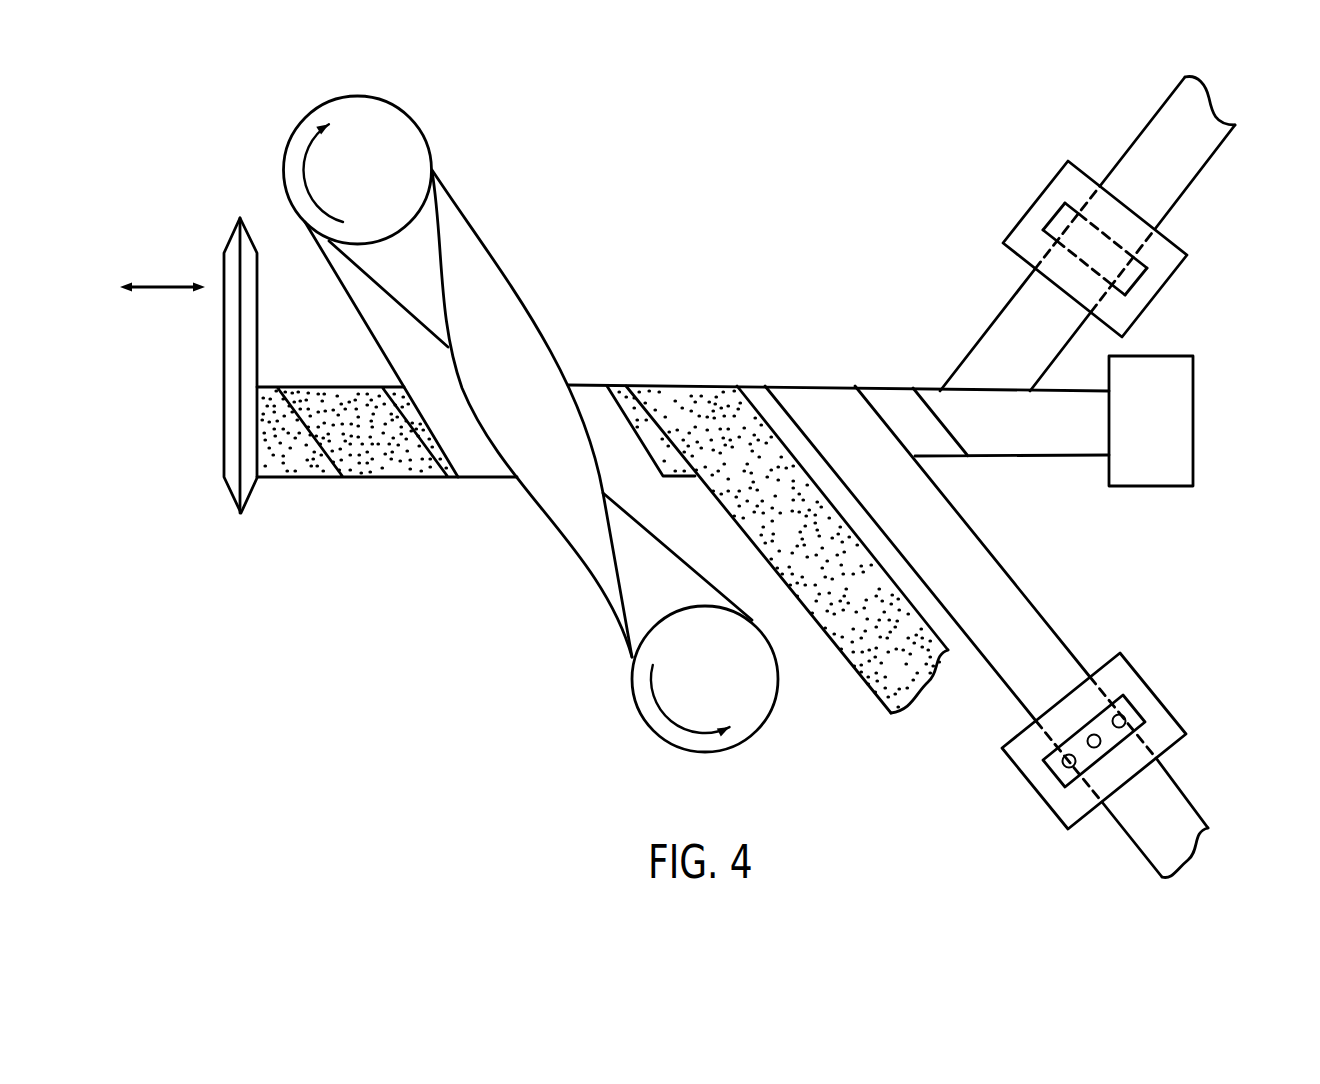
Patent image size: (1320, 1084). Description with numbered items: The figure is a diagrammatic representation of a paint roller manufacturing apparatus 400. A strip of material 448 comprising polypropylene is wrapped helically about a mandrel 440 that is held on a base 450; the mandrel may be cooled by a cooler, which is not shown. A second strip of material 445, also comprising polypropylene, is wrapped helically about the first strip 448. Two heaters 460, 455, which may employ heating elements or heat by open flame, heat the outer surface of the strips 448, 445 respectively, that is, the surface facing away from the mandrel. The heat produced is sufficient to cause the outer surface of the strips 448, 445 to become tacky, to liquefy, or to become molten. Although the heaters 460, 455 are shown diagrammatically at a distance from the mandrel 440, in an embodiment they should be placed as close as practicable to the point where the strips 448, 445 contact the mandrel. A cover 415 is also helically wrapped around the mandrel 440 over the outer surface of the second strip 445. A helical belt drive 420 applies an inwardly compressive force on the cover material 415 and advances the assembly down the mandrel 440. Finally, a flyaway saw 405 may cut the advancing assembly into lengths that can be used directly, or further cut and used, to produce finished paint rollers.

The paint roller manufacturing apparatus 400 is at (336, 589).
The flyaway saw 405 is at (228, 246).
The cover 415 is at (877, 657).
The helical belt drive 420 is at (556, 495).
The mandrel 440 is at (1047, 437).
The second strip of material 445 is at (1150, 842).
The strip of material 448 is at (1165, 122).
The base 450 is at (1182, 424).
The heater 455 is at (1173, 713).
The heater 460 is at (1022, 217).